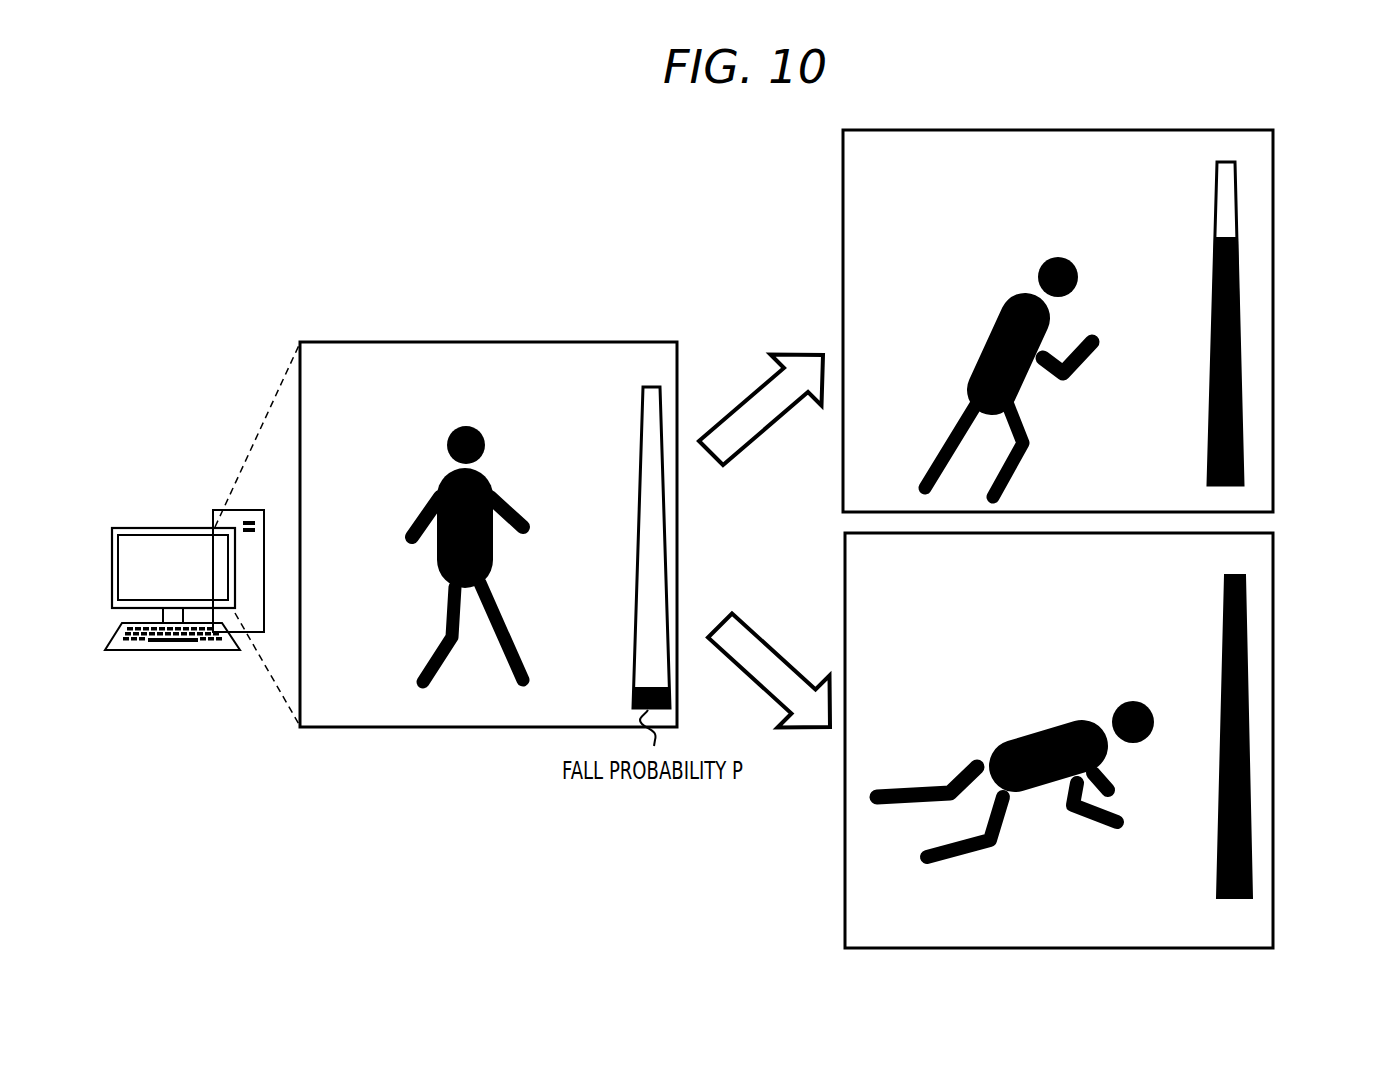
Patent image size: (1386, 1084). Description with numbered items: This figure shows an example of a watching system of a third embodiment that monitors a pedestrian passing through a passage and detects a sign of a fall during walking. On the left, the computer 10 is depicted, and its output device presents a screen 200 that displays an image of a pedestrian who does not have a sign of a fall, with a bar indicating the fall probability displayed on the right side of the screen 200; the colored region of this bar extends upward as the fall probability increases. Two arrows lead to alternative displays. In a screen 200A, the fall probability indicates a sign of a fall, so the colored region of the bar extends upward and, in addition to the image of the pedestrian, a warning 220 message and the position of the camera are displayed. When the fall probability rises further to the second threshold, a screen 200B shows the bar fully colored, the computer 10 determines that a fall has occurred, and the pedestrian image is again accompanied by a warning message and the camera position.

The computer 10 is at (218, 528).
The screen 200 is at (388, 342).
The screen 200A is at (996, 130).
The screen 200B is at (1273, 683).
The warning 220 is at (1144, 150).